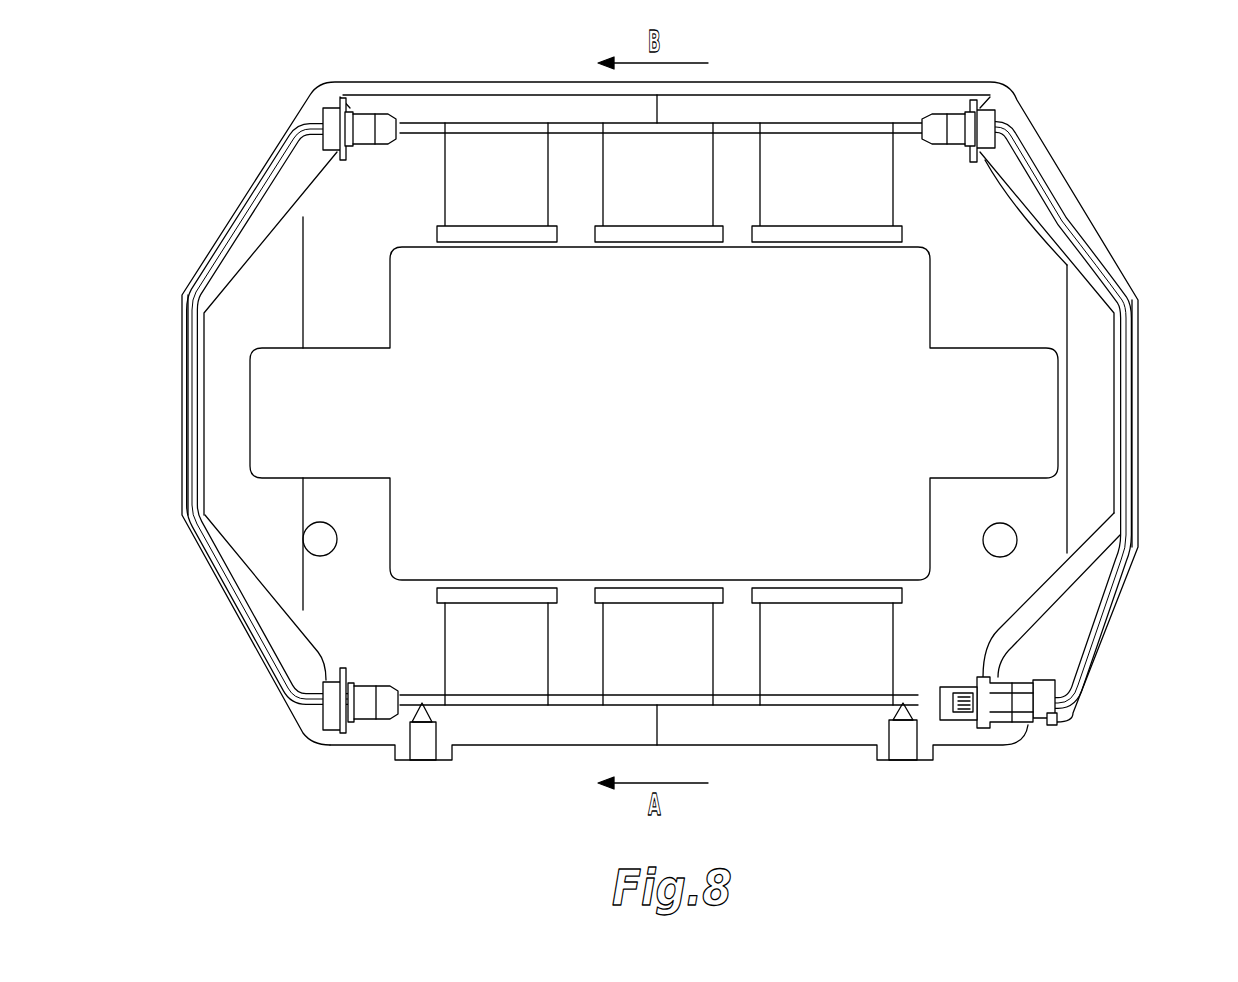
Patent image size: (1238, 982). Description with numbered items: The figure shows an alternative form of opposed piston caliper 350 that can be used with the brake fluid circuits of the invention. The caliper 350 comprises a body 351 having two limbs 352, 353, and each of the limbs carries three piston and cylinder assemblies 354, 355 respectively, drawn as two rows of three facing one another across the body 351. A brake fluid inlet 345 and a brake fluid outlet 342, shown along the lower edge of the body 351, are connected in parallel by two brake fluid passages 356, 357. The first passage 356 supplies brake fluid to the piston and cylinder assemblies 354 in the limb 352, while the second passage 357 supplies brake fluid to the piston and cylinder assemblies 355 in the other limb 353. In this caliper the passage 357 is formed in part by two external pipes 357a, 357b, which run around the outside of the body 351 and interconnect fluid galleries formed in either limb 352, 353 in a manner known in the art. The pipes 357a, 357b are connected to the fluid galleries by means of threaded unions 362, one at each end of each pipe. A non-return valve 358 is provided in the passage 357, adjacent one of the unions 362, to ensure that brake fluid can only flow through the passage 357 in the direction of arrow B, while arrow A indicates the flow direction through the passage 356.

The opposed piston caliper 350 is at (222, 178).
The body 351 is at (222, 420).
The limb 352 is at (400, 644).
The limb 353 is at (848, 105).
The piston and cylinder assemblies 354 is at (502, 620).
The piston and cylinder assemblies 355 is at (497, 212).
The brake fluid passage 356 is at (738, 705).
The brake fluid passage 357 is at (1060, 195).
The external pipe 357a is at (1112, 600).
The external pipe 357b is at (250, 610).
The non-return valve 358 is at (953, 720).
The threaded unions 362 is at (345, 115).
The brake fluid outlet 342 is at (424, 748).
The brake fluid inlet 345 is at (900, 748).